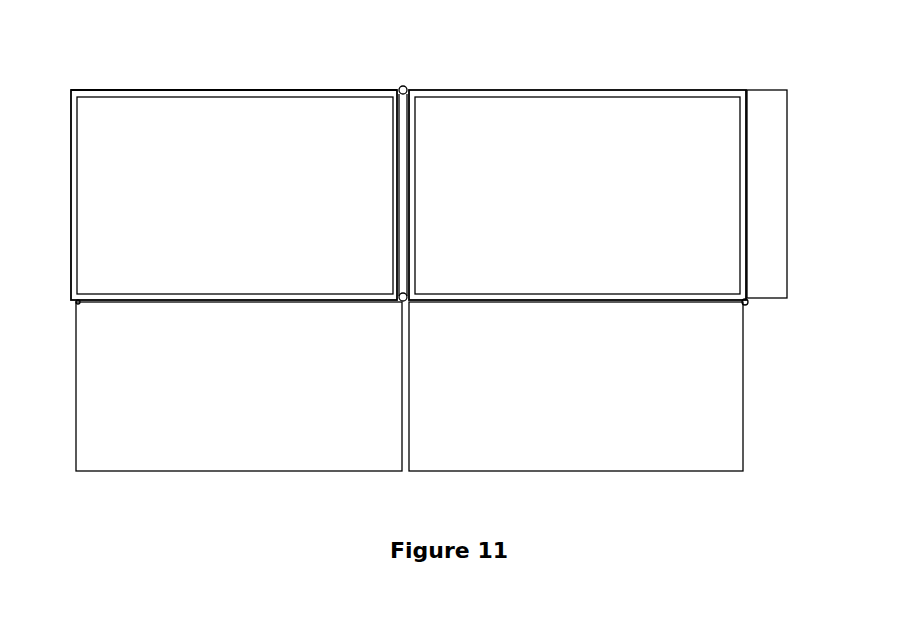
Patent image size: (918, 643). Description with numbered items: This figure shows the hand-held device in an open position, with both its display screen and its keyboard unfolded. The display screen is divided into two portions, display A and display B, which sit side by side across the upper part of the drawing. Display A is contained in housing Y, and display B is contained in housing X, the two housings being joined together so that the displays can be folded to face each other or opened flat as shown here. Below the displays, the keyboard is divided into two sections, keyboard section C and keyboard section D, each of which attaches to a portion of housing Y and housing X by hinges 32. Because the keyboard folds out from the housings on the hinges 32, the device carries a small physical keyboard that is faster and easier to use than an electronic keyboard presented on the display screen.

The hinge 32 is at (748, 305).
The display screen portion A is at (229, 123).
The display screen portion B is at (579, 118).
The keyboard section C is at (216, 452).
The keyboard section D is at (557, 445).
The housing X is at (702, 92).
The housing Y is at (154, 92).